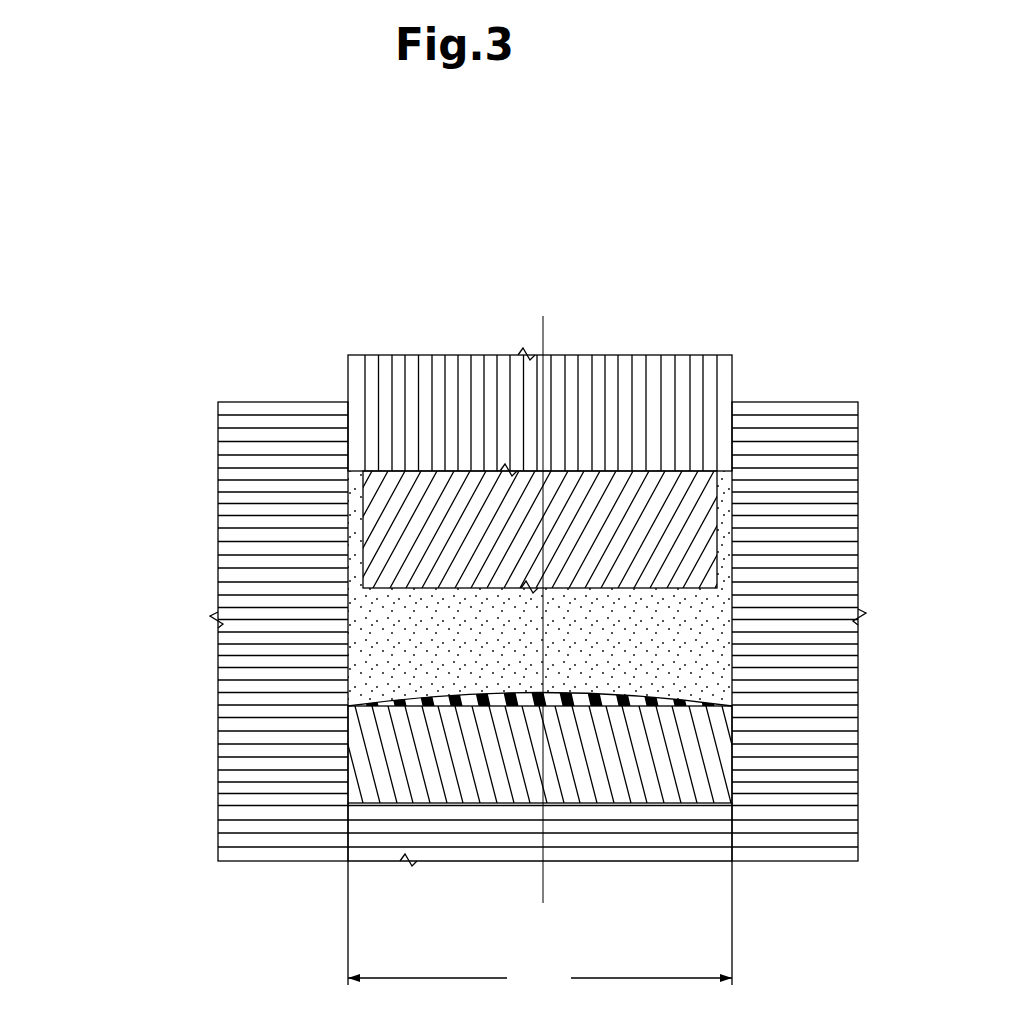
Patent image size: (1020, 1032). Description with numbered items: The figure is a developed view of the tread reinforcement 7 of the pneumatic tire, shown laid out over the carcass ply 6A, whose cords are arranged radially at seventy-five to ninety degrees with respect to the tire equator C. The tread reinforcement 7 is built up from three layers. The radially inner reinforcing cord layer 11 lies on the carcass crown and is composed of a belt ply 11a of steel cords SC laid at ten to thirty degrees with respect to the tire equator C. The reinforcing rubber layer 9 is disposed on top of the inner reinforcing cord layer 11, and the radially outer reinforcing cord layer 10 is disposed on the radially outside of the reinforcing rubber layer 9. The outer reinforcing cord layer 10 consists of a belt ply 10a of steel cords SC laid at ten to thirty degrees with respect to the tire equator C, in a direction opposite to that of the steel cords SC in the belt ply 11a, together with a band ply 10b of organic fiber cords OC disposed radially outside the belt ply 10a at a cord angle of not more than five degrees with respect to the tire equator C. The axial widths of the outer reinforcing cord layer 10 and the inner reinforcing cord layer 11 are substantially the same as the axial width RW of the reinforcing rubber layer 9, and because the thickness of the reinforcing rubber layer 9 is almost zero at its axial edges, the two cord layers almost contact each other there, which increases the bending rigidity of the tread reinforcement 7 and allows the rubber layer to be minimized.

The ply 6A is at (246, 410).
The tread reinforcement 7 is at (406, 575).
The radially outer reinforcing cord layer 10 is at (429, 470).
The belt ply 10a is at (382, 533).
The band ply 10b is at (362, 435).
The reinforcing rubber layer 9 is at (365, 632).
The radially inner reinforcing cord layer 11 is at (408, 744).
The belt ply 11a is at (545, 697).
The organic fiber cords OC is at (468, 386).
The steel cords SC is at (645, 510).
The tire equator C is at (540, 626).
The axial width of the reinforcing rubber layer RW is at (540, 897).